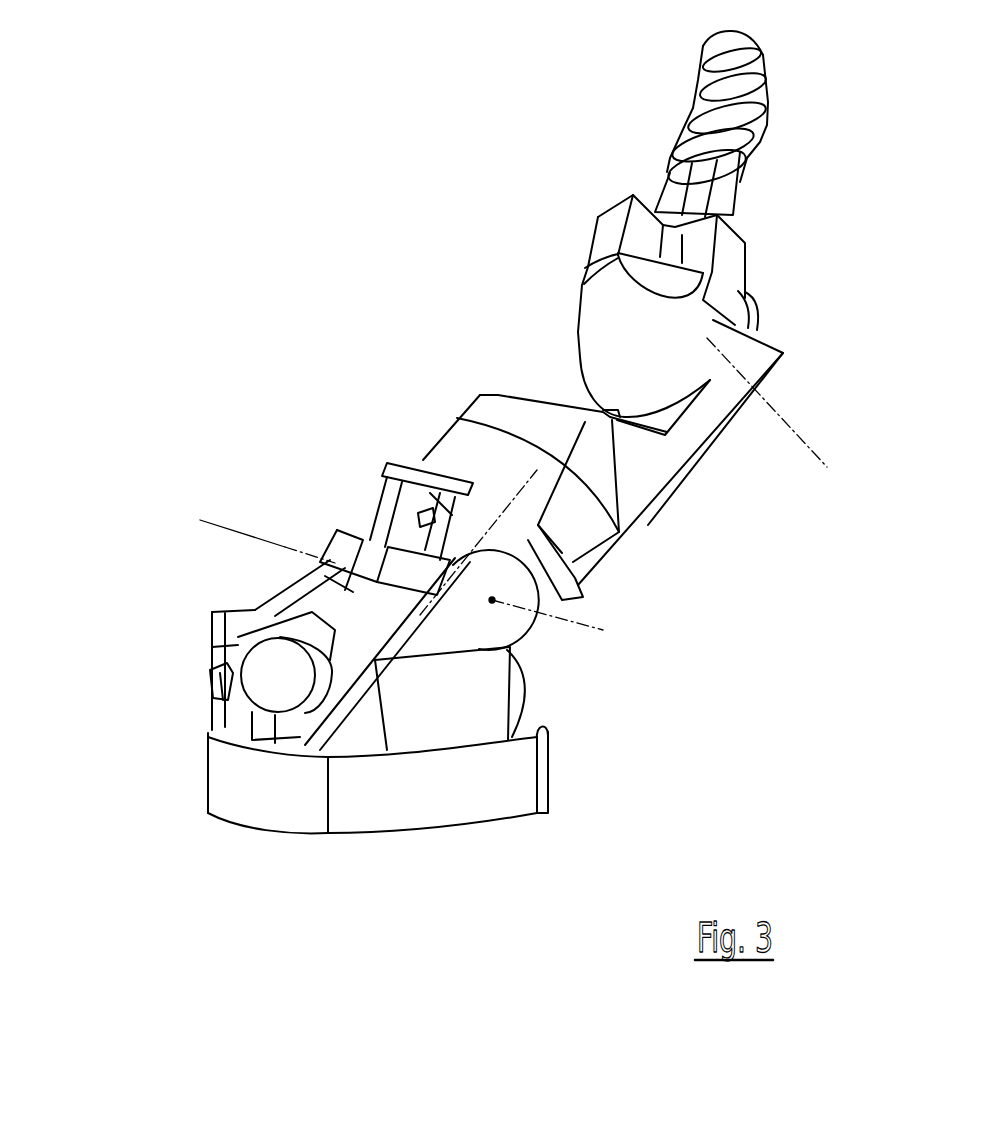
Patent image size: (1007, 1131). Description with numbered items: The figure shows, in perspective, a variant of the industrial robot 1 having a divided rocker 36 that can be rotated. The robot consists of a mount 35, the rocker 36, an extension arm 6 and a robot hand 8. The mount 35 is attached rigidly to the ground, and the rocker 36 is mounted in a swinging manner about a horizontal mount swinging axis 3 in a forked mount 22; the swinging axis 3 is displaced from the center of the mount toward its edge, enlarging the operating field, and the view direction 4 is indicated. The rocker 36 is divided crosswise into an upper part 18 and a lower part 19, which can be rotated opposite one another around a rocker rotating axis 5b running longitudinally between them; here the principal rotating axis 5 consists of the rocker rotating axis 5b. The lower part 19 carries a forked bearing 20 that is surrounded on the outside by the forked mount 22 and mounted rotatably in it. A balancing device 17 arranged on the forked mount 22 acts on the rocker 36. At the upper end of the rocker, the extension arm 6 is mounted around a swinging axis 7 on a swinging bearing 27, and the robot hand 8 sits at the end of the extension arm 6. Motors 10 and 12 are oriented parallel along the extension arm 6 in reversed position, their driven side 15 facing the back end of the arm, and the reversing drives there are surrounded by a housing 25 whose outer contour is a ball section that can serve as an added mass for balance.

The industrial robot 1 is at (370, 240).
The mount swinging axis 3 is at (252, 540).
The viewing direction 4 is at (168, 392).
The principal rotating axis 5 is at (533, 477).
The rocker rotating axis 5b is at (478, 531).
The extension arm 6 is at (720, 197).
The swinging axis 7 is at (773, 403).
The robot hand 8 is at (730, 37).
The motor 10 is at (727, 260).
The motor 12 is at (618, 212).
The driven side 15 is at (580, 272).
The balancing device 17 is at (223, 655).
The upper part 18 is at (627, 502).
The lower part 19 is at (570, 600).
The forked bearing 20 is at (443, 470).
The forked mount 22 is at (520, 653).
The housing 25 is at (612, 352).
The swinging bearing 27 is at (748, 303).
The mount 35 is at (515, 775).
The rocker 36 is at (527, 420).